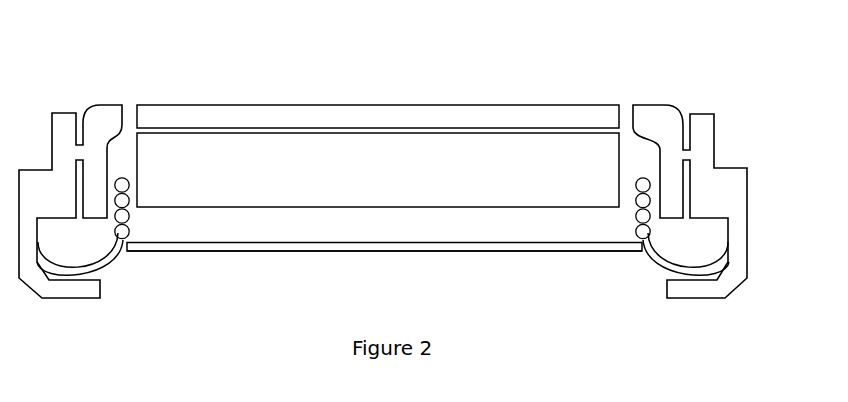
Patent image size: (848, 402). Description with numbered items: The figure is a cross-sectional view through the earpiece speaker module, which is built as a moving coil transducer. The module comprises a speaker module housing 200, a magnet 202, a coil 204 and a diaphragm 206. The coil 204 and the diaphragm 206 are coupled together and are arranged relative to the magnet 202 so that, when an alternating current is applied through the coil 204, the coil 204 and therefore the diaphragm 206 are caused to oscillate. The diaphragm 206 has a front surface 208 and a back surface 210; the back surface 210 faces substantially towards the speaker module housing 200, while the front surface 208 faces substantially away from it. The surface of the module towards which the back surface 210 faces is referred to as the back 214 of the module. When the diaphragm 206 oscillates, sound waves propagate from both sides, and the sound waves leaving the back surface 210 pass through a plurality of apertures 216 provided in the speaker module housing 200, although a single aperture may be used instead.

The speaker module housing 200 is at (419, 172).
The magnet 202 is at (262, 181).
The coil 204 is at (125, 244).
The diaphragm 206 is at (517, 252).
The front surface 208 is at (250, 254).
The back surface 210 is at (291, 234).
The back 214 is at (335, 105).
The apertures 216 is at (628, 110).